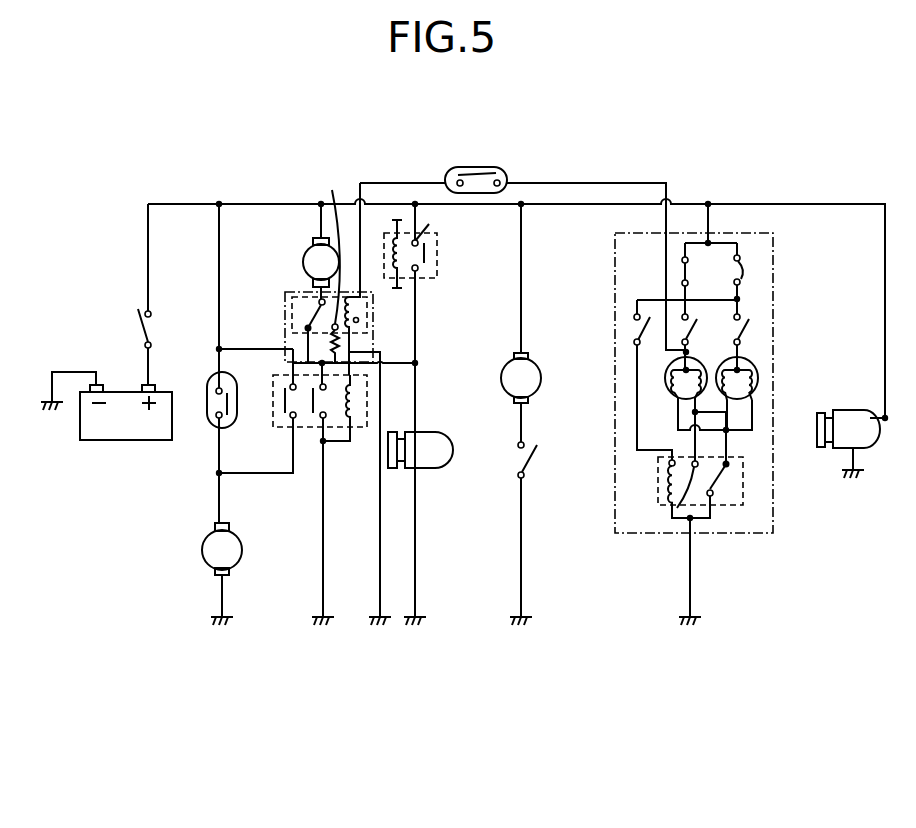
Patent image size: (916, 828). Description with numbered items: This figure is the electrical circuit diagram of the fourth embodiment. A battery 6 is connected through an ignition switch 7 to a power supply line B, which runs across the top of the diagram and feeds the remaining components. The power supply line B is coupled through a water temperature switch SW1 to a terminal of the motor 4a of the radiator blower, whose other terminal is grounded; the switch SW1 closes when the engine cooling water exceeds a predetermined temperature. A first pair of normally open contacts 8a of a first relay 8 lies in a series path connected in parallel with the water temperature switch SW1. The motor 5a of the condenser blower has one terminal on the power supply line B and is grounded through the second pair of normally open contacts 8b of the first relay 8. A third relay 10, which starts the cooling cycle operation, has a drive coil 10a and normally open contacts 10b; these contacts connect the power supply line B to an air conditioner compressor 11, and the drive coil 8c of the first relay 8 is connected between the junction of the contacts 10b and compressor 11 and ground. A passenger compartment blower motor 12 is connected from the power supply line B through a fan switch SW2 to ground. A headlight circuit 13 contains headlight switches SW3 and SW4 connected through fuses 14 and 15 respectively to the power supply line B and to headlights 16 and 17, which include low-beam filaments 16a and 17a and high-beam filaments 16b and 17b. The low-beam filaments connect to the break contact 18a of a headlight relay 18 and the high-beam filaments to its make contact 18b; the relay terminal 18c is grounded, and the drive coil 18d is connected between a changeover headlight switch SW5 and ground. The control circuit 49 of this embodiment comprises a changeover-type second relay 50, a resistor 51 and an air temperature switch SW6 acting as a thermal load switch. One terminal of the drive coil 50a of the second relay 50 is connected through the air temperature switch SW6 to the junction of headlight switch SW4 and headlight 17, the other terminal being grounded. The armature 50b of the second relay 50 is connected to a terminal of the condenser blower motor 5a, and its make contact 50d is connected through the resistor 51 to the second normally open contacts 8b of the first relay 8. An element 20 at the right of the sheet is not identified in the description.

The power supply line B is at (168, 203).
The ignition switch 7 is at (152, 327).
The battery 6 is at (123, 440).
The water temperature switch SW1 is at (210, 427).
The motor of radiator blower 4a is at (202, 547).
The motor of condenser blower 5a is at (313, 239).
The second relay 50 is at (287, 297).
The drive coil of second relay 50a is at (358, 319).
The armature of second relay 50b is at (315, 311).
The make contact of second relay 50d is at (329, 247).
The resistor 51 is at (338, 346).
The control circuit 49 is at (373, 322).
The third relay 10 is at (437, 278).
The drive coil of third relay 10a is at (429, 224).
The normally open contacts of third relay 10b is at (424, 253).
The first relay 8 is at (362, 428).
The first pair of normally open contacts of first relay 8a is at (285, 424).
The second pair of normally open contacts of first relay 8b is at (314, 425).
The drive coil of first relay 8c is at (355, 389).
The air conditioner system compressor 11 is at (438, 468).
The blower motor 12 is at (548, 358).
The fan switch SW2 is at (517, 457).
The air temperature switch SW6 is at (505, 168).
The headlight circuit 13 is at (773, 513).
The fuse 15 is at (675, 245).
The headlight switch SW4 is at (697, 316).
The fuse 14 is at (742, 272).
The headlight switch SW5 is at (632, 317).
The headlight switch SW3 is at (749, 318).
The headlight 17 is at (664, 378).
The low-beam filament 17a is at (676, 394).
The high-beam filament 17b is at (694, 399).
The headlight 16 is at (757, 363).
The low-beam filament 16a is at (752, 383).
The high-beam filament 16b is at (758, 400).
The headlight relay 18 is at (743, 478).
The break contact of headlight relay 18a is at (743, 455).
The make contact of headlight relay 18b is at (672, 514).
The terminal of headlight relay 18c is at (713, 484).
The drive coil of headlight relay 18d is at (666, 493).
The starter motor 20 is at (873, 453).